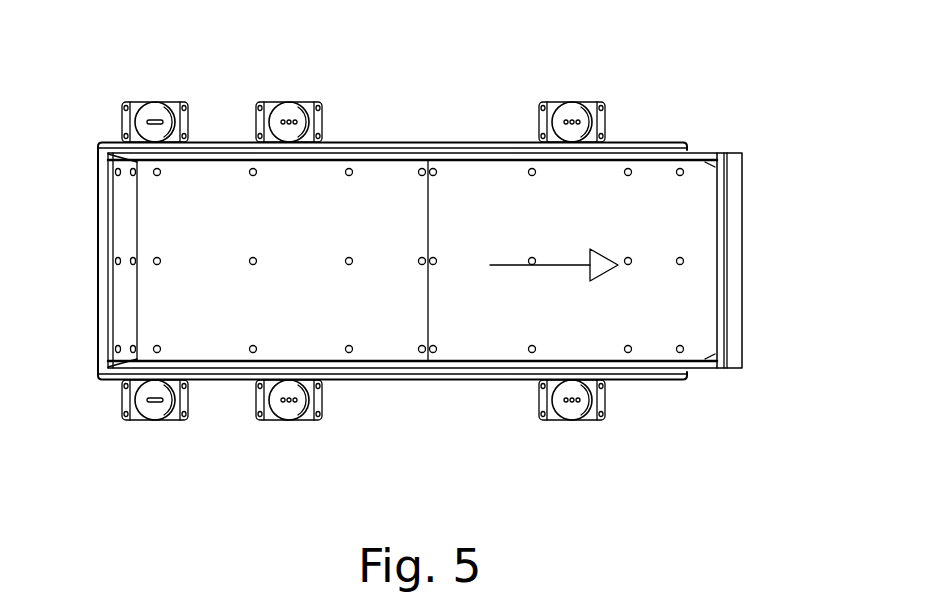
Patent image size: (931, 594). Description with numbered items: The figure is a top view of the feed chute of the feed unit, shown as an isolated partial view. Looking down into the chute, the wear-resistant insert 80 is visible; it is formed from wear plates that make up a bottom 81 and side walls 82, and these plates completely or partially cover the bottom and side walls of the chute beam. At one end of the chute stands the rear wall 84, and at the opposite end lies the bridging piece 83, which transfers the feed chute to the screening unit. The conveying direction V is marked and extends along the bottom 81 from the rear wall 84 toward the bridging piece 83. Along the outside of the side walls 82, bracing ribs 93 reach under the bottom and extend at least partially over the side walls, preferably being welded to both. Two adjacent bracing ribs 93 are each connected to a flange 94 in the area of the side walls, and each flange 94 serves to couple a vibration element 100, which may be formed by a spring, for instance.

The wear-resistant insert 80 is at (415, 230).
The bottom 81 is at (366, 180).
The side walls 82 is at (308, 167).
The bridging piece 83 is at (725, 273).
The rear wall 84 is at (121, 213).
The bracing ribs 93 is at (250, 110).
The flange 94 is at (180, 108).
The vibration element 100 is at (150, 107).